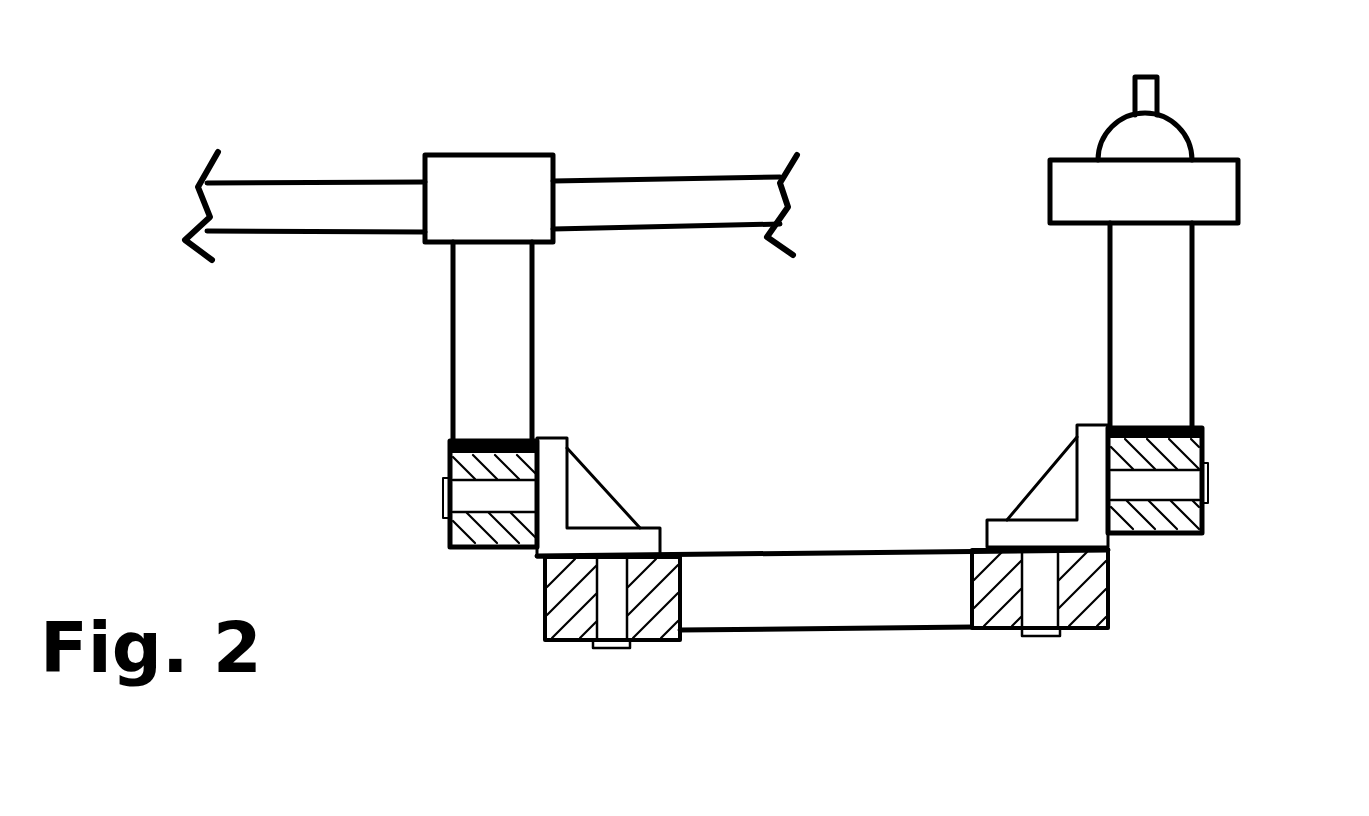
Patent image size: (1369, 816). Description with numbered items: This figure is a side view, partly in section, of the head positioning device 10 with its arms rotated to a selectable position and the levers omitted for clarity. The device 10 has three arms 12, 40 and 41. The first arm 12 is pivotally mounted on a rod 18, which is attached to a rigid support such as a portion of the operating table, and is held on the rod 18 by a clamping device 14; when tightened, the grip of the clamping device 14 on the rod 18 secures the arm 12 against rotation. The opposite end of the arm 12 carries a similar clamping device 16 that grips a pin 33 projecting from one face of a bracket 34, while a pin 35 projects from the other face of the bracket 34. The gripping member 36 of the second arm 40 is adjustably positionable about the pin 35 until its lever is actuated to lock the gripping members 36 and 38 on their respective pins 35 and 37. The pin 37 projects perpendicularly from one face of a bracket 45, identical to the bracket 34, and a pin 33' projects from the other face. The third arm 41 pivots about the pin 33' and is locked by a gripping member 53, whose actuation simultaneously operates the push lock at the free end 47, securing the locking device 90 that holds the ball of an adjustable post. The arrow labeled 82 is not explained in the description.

The head positioning device 10 is at (240, 365).
The arm 12 is at (518, 343).
The clamping device 14 is at (508, 187).
The clamping device 16 is at (450, 470).
The rod 18 is at (297, 203).
The pin 33 is at (481, 551).
The pin 33' is at (1185, 548).
The bracket 34 is at (590, 500).
The pin 35 is at (628, 645).
The gripping member 36 is at (572, 638).
The pin 37 is at (1020, 627).
The gripping member 38 is at (1107, 597).
The arm 40 is at (827, 573).
The arm 41 is at (1123, 347).
The bracket 45 is at (1060, 490).
The free end 47 is at (1068, 155).
The gripping member 53 is at (1202, 455).
The accessory mount 82 is at (1247, 185).
The locking device 90 is at (1168, 140).